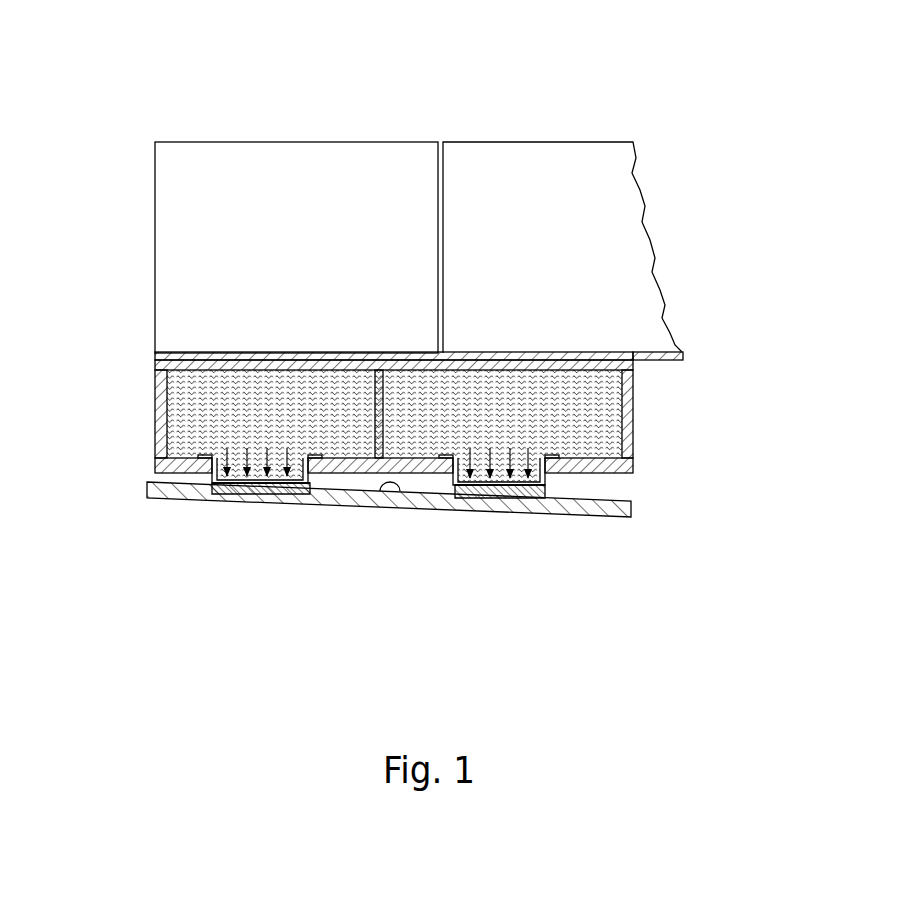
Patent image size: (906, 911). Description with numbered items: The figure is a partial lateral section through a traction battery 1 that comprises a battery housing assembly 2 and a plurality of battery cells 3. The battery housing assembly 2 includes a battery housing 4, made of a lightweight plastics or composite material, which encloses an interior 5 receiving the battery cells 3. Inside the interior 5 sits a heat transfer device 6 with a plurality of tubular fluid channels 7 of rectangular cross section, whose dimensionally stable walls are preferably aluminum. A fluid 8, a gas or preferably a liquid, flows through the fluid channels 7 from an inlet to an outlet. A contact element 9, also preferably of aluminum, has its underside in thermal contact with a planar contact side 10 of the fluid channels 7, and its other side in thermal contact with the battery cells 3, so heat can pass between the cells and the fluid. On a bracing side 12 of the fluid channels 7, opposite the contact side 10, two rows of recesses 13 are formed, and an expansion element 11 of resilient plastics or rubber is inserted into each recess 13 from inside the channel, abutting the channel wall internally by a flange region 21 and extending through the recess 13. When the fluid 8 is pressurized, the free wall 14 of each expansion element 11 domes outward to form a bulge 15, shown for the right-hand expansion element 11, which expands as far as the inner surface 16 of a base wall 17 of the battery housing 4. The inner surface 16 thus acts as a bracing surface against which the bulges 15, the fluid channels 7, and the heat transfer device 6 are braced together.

The traction battery 1 is at (120, 123).
The battery housing assembly 2 is at (157, 508).
The battery cells 3 is at (300, 162).
The battery housing 4 is at (147, 490).
The interior 5 is at (427, 485).
The heat transfer device 6 is at (150, 413).
The fluid channels 7 is at (156, 387).
The fluid 8 is at (215, 428).
The contact element 9 is at (178, 352).
The contact side 10 is at (635, 352).
The expansion elements 11 is at (207, 484).
The bracing side 12 is at (360, 473).
The recesses 13 is at (318, 482).
The free wall 14 is at (261, 503).
The bulge 15 is at (531, 500).
The inner surface 16 is at (372, 482).
The base wall 17 is at (202, 490).
The flange region 21 is at (320, 457).